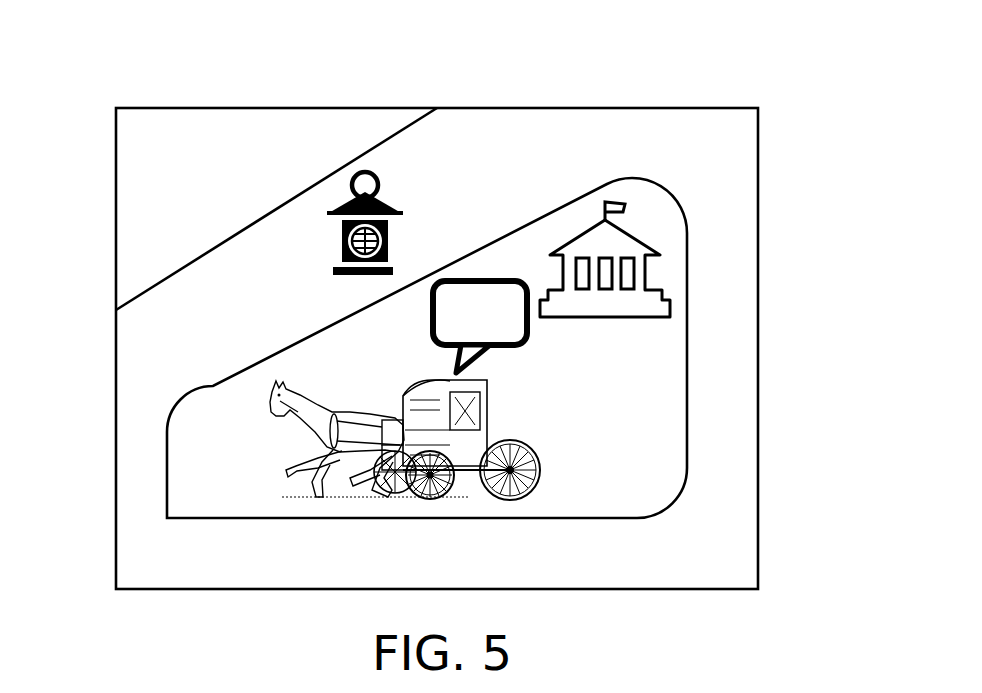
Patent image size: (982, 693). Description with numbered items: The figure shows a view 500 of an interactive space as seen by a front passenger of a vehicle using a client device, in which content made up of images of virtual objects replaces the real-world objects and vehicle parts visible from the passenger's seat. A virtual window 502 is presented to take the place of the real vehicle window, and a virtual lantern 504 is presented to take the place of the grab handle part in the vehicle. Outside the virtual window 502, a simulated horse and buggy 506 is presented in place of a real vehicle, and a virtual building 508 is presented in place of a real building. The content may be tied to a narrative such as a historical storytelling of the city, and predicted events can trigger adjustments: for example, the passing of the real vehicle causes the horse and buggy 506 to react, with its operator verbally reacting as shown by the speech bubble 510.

The view 500 is at (759, 127).
The virtual window 502 is at (688, 386).
The virtual lantern 504 is at (358, 180).
The simulated horse and buggy 506 is at (267, 407).
The virtual building 508 is at (643, 273).
The speech bubble 510 is at (485, 278).